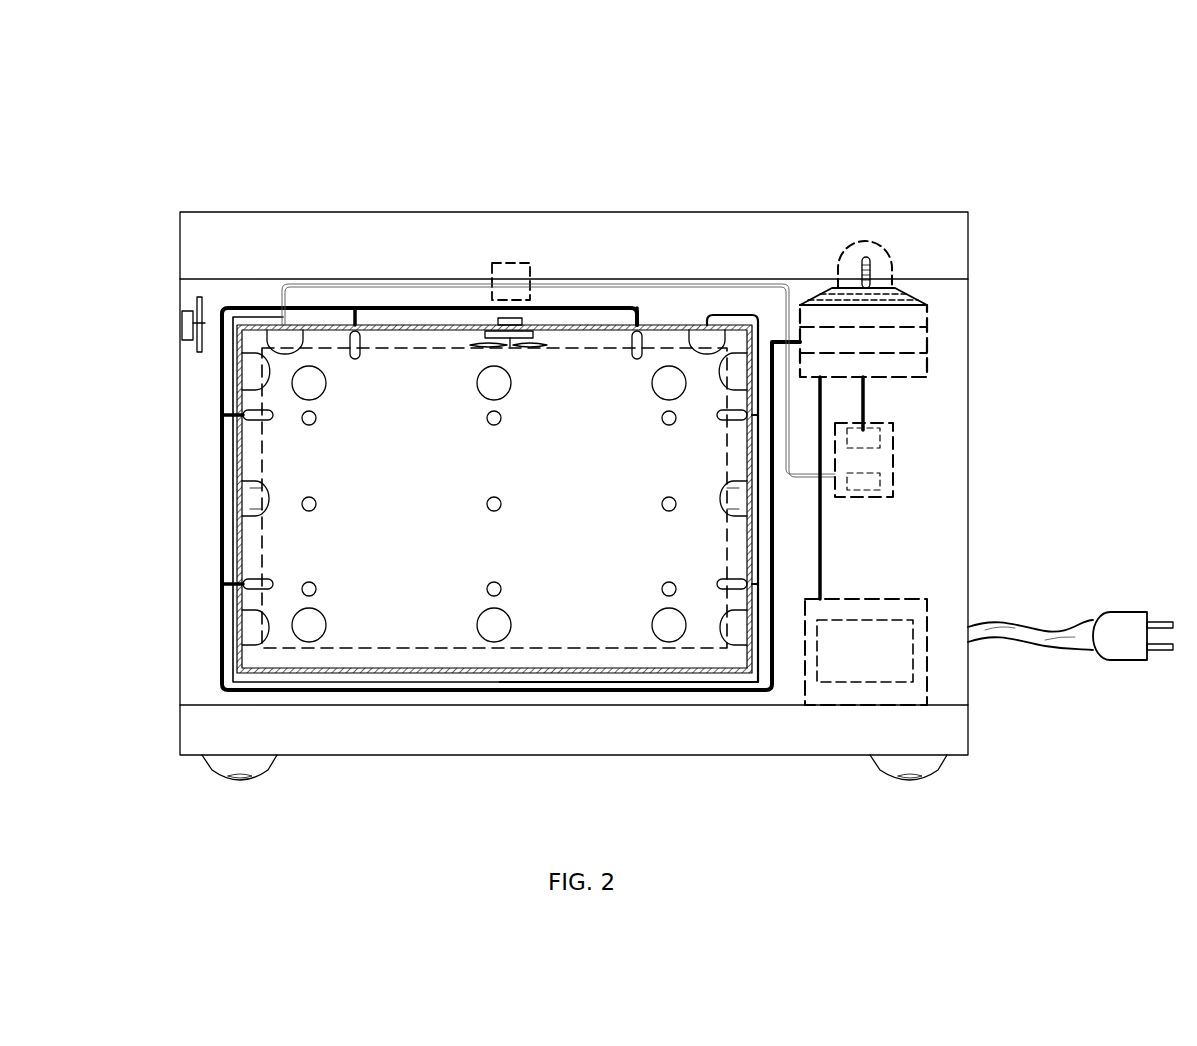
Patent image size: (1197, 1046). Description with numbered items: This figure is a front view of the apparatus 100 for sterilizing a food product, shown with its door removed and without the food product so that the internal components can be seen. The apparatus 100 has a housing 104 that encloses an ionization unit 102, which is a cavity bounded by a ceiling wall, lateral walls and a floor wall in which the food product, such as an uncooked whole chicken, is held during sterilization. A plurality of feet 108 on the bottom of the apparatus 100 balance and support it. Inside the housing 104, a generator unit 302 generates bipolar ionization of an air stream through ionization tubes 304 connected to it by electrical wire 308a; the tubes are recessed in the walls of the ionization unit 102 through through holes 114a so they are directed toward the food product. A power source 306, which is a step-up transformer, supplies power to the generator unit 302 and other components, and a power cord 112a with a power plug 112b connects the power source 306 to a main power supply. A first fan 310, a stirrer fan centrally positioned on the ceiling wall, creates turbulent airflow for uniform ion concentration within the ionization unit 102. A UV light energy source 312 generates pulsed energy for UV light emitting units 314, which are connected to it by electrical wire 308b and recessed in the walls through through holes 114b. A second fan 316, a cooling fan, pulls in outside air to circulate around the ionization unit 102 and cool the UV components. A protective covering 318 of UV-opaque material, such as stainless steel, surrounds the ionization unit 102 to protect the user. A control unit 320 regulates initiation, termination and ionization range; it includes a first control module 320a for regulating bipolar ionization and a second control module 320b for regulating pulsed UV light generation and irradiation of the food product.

The apparatus 100 is at (948, 185).
The ionization unit 102 is at (353, 648).
The housing 104 is at (215, 213).
The feet 108 is at (262, 765).
The power cord 112a is at (1033, 645).
The power plug 112b is at (1125, 662).
The through holes 114a is at (500, 497).
The through holes 114b is at (506, 612).
The generator unit 302 is at (927, 318).
The ionization tubes 304 is at (272, 582).
The power source 306 is at (930, 612).
The electrical wire 308a is at (772, 520).
The electrical wire 308b is at (230, 526).
The first fan 310 is at (548, 343).
The UV light energy source 312 is at (492, 263).
The UV light emitting units 314 is at (272, 498).
The second fan 316 is at (181, 311).
The protective covering 318 is at (445, 673).
The control unit 320 is at (893, 425).
The first control module 320a is at (880, 432).
The second control module 320b is at (880, 487).